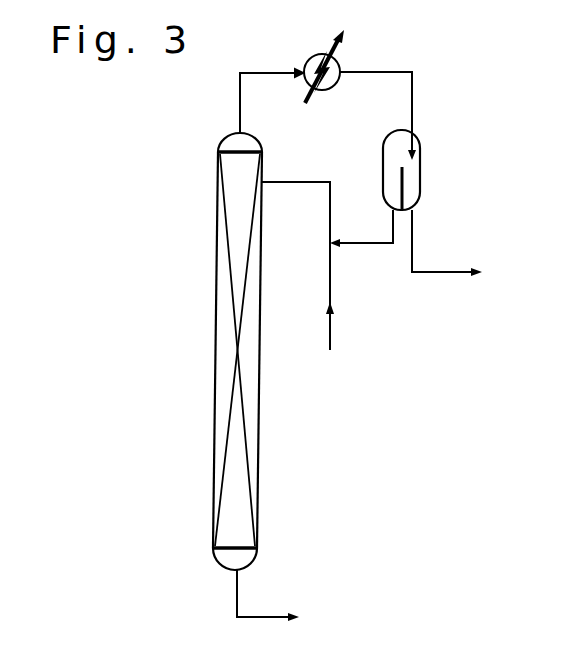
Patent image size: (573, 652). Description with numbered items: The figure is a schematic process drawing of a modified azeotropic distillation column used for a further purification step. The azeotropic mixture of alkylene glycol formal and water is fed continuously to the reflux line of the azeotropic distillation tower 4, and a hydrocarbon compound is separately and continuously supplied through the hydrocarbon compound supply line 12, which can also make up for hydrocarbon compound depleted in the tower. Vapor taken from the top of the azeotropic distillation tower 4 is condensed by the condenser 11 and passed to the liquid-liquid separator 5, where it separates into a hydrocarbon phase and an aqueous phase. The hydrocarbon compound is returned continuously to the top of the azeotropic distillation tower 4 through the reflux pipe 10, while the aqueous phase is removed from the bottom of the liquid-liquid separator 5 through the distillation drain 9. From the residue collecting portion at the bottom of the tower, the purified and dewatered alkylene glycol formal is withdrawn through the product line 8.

The azeotropic distillation tower 4 is at (257, 477).
The liquid-liquid separator 5 is at (423, 181).
The product line 8 is at (268, 595).
The distillation drain 9 is at (447, 243).
The reflux pipe 10 is at (361, 242).
The condenser 11 is at (340, 60).
The hydrocarbon compound supply line 12 is at (315, 272).